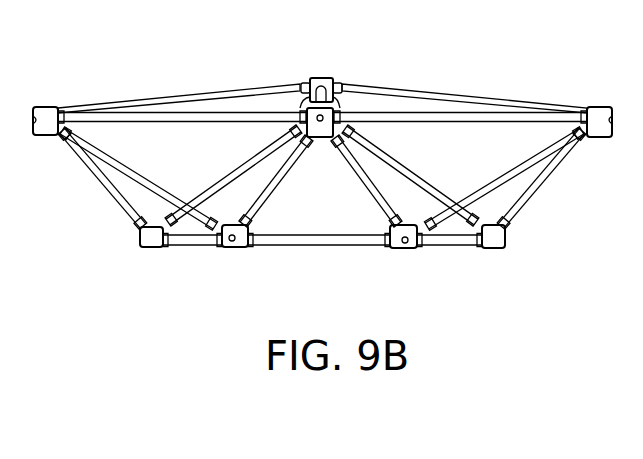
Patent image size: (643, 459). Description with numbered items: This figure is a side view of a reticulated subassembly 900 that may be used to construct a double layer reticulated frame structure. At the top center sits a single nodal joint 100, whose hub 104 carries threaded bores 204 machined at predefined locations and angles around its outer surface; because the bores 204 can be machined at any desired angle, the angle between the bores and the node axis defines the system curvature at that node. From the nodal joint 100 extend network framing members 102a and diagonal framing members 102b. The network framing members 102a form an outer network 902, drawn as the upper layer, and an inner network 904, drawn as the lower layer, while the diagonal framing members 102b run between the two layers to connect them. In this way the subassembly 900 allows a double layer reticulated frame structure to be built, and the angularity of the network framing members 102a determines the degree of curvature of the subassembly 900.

The reticulated subassembly 900 is at (441, 54).
The nodal joint 100 is at (355, 60).
The hub 104 is at (313, 78).
The bores 204 is at (323, 138).
The network framing members 102a is at (210, 97).
The diagonal framing members 102b is at (270, 170).
The outer network 902 is at (25, 121).
The inner network 904 is at (95, 238).